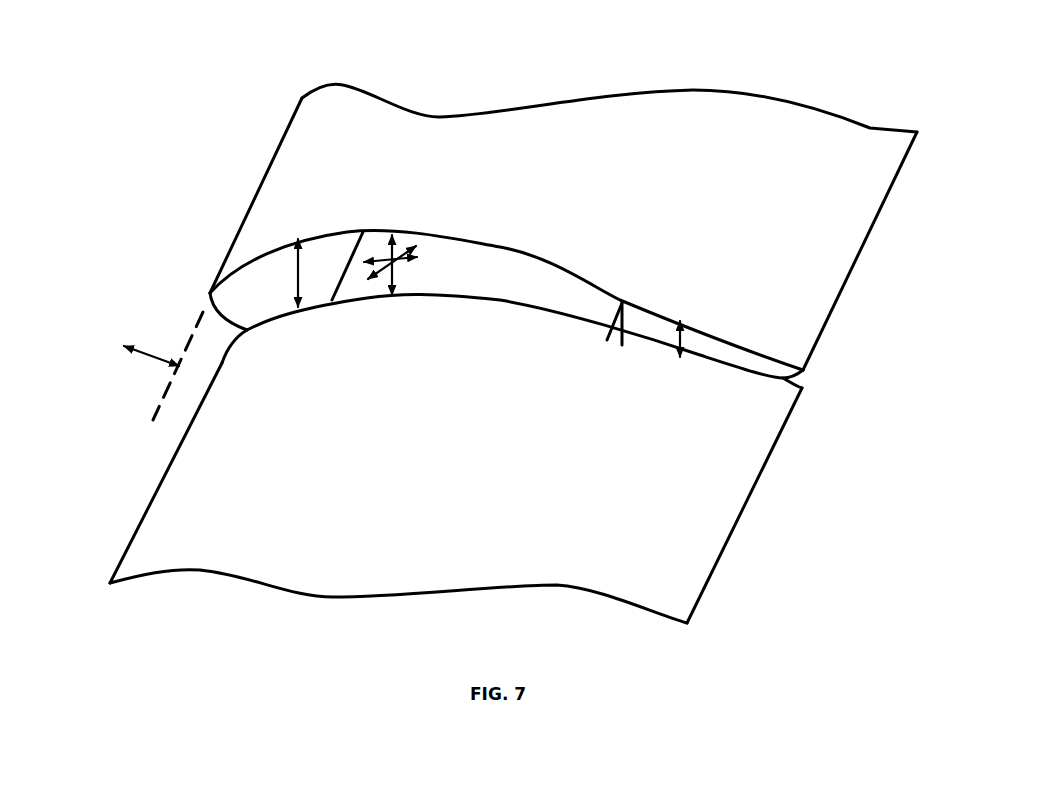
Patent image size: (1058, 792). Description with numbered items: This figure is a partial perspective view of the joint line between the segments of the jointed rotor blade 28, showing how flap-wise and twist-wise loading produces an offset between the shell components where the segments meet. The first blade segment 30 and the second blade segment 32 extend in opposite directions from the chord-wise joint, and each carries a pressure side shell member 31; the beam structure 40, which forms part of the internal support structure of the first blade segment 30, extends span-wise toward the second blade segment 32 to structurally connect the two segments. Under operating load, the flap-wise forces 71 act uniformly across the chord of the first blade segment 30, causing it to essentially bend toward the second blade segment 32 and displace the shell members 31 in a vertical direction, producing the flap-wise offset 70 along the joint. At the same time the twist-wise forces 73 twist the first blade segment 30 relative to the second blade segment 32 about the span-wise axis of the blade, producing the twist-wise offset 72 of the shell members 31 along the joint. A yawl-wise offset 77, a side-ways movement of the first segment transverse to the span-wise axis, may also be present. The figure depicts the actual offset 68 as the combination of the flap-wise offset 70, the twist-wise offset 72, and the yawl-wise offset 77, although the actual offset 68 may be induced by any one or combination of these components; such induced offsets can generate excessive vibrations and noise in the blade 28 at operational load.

The jointed rotor blade 28 is at (150, 186).
The first blade segment 30 is at (818, 332).
The pressure side shell member 31 is at (590, 182).
The second blade segment 32 is at (155, 487).
The beam structure 40 is at (623, 322).
The actual offset 68 is at (397, 267).
The flap-wise offset 70 is at (543, 279).
The twist-wise offset 72 is at (303, 267).
The flap-wise forces 71 is at (233, 108).
The twist-wise forces 73 is at (633, 39).
The yawl-wise offset 77 is at (150, 353).